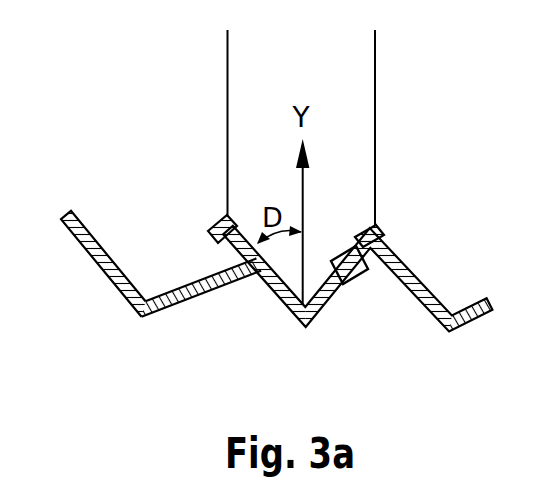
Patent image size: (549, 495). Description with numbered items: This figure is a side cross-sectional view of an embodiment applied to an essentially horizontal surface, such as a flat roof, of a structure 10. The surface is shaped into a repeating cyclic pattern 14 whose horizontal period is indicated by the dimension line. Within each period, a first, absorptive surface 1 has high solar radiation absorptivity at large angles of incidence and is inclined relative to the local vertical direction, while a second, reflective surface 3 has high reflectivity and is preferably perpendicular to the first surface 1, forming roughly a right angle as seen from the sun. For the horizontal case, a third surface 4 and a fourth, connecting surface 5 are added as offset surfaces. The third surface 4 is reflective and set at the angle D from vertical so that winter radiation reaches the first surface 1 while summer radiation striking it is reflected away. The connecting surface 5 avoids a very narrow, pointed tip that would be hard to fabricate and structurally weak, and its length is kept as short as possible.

The first absorptive surface 1 is at (229, 238).
The second reflective surface 3 is at (172, 293).
The third surface 4 is at (112, 279).
The connecting surface 5 is at (220, 222).
The structure 10 is at (461, 403).
The cyclic pattern 14 is at (375, 48).